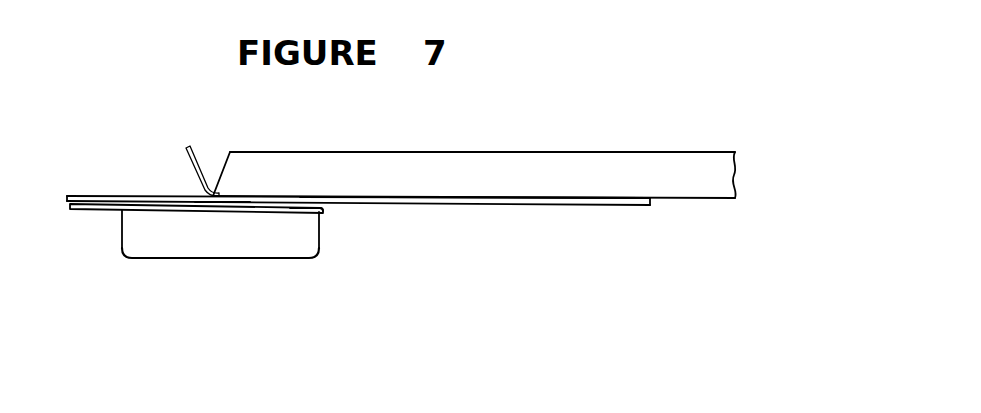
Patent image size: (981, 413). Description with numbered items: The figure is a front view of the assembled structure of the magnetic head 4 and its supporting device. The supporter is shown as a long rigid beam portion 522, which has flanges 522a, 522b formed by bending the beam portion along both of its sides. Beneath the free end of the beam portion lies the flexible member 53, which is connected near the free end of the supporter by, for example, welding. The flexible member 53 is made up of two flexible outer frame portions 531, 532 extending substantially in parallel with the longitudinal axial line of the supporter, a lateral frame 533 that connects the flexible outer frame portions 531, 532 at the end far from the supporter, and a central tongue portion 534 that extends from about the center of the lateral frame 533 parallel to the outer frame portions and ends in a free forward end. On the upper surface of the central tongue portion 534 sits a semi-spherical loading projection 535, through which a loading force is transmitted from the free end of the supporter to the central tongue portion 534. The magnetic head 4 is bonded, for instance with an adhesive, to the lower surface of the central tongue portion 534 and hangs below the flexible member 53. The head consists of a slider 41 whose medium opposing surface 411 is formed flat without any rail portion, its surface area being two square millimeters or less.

The magnetic head 4 is at (249, 269).
The slider 41 is at (252, 240).
The medium opposing surface 411 is at (157, 259).
The flexible member 53 is at (353, 200).
The flexible outer frame portion 531 is at (133, 195).
The flexible outer frame portion 532 is at (448, 206).
The lateral frame 533 is at (90, 212).
The central tongue portion 534 is at (303, 202).
The loading projection 535 is at (232, 197).
The rigid beam portion 522 is at (474, 140).
The flange 522a is at (590, 178).
The flange 522b is at (475, 197).